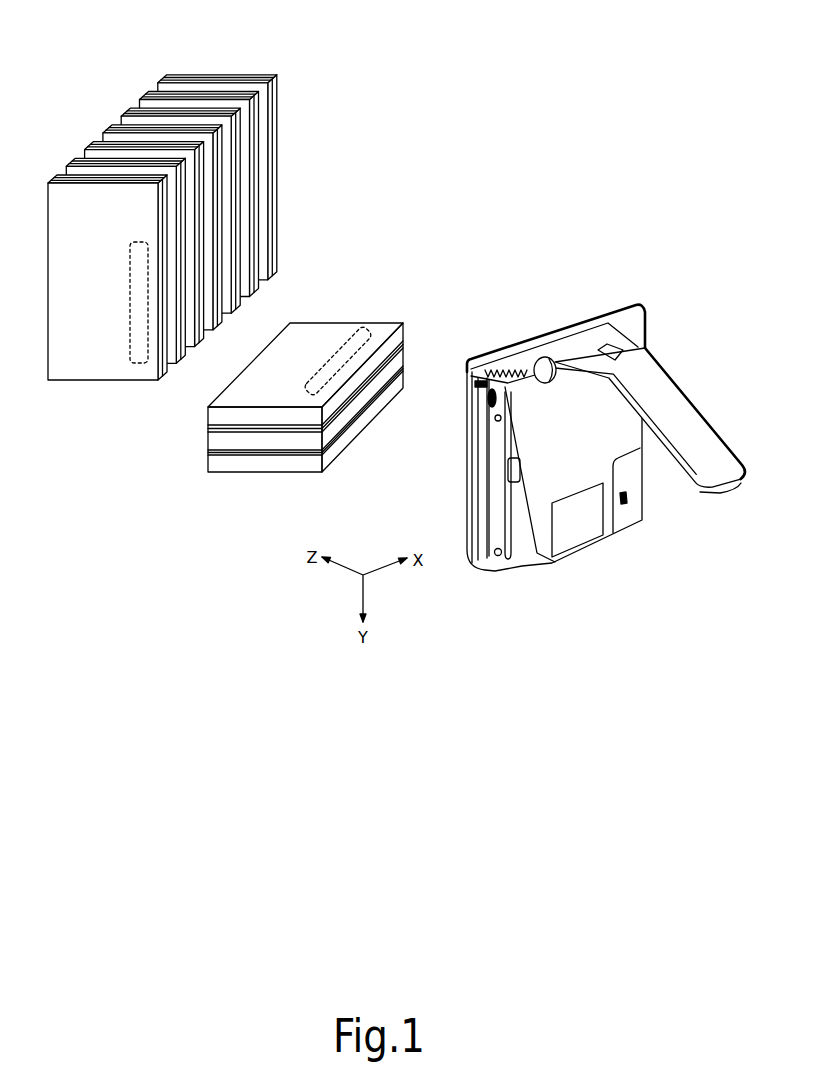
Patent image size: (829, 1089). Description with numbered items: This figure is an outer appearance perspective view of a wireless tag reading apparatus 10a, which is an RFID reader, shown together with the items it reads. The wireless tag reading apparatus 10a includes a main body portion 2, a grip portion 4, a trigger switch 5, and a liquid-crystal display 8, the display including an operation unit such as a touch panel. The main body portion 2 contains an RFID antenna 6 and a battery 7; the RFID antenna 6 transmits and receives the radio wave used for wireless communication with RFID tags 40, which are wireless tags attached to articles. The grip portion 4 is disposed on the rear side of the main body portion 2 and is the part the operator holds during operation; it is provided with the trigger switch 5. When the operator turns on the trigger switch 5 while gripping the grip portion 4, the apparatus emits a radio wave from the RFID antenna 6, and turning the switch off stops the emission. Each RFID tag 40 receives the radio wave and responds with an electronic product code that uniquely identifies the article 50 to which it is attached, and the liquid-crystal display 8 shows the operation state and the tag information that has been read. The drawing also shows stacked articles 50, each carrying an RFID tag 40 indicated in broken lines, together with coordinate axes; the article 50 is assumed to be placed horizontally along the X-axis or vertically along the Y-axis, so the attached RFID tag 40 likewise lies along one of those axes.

The main body portion 2 is at (598, 548).
The grip portion 4 is at (688, 418).
The trigger switch 5 is at (628, 352).
The RFID antenna 6 is at (467, 486).
The battery 7 is at (628, 517).
The liquid-crystal display 8 is at (573, 555).
The wireless tag reading apparatus 10a is at (636, 297).
The RFID tag 40 is at (141, 363).
The article 50 is at (228, 72).